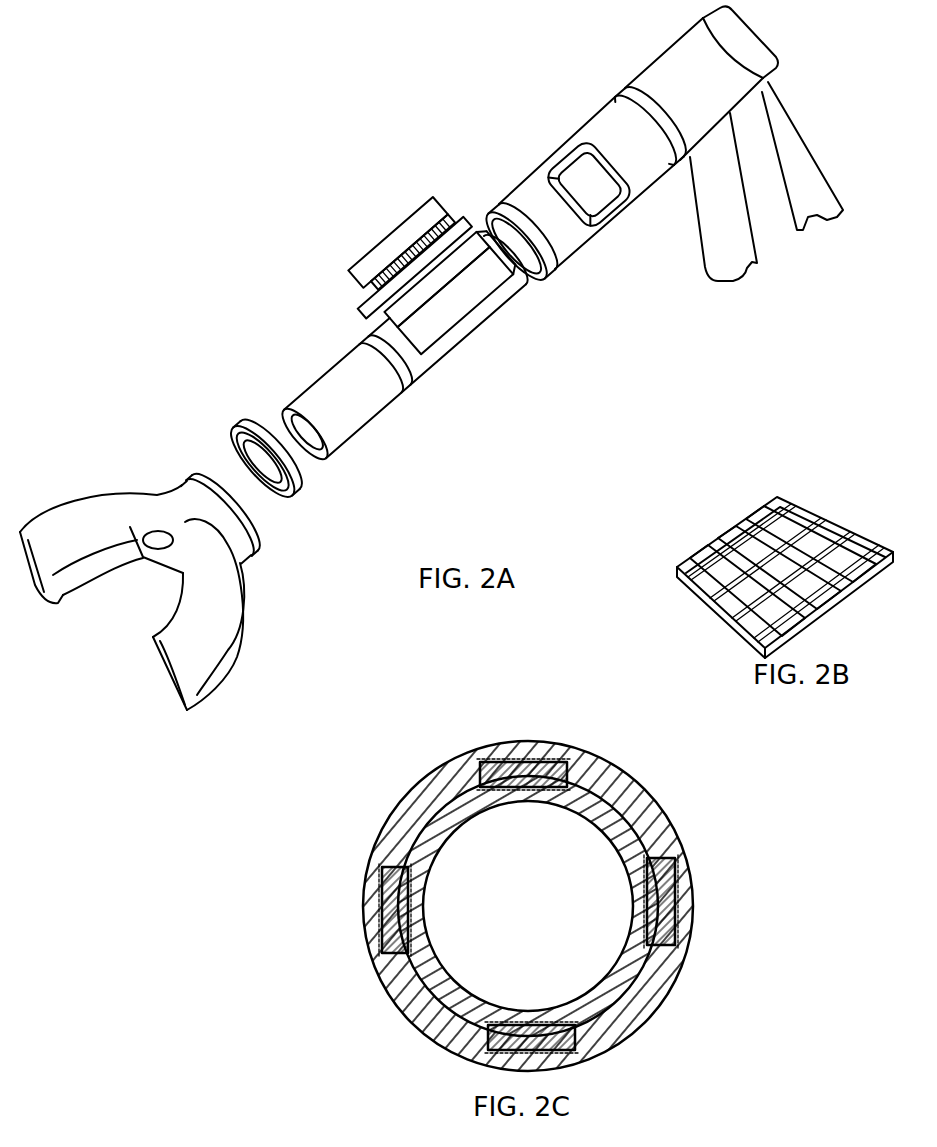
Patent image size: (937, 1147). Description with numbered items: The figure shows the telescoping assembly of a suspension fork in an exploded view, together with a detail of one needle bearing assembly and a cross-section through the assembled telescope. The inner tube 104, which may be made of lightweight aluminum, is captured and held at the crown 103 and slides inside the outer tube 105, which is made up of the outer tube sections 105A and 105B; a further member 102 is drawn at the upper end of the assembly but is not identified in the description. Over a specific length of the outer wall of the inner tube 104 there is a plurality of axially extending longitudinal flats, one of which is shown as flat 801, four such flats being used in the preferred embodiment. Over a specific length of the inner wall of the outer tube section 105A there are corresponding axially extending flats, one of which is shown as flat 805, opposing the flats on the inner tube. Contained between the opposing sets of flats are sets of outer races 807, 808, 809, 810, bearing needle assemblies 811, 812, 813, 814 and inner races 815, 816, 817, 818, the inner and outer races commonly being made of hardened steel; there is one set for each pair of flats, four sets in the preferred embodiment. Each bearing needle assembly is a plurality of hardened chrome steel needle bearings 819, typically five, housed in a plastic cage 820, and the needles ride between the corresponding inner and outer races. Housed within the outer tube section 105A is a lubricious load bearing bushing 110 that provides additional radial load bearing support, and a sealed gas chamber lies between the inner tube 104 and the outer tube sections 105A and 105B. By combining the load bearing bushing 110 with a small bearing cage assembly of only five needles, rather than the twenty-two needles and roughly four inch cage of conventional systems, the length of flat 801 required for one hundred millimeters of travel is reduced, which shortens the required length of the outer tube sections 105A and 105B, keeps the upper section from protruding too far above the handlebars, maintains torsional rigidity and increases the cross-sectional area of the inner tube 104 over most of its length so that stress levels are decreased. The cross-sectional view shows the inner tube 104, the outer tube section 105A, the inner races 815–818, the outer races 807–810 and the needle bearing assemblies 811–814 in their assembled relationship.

In FIG. 2A, the handle body 102 is at (705, 53).
In FIG. 2A, the crown 103 is at (195, 510).
In FIG. 2A, the inner tube 104 is at (345, 393).
In FIG. 2C, the inner tube 104 is at (620, 827).
In FIG. 2C, the outer tube 105 is at (613, 783).
In FIG. 2A, the outer tube section 105A is at (637, 150).
In FIG. 2A, the outer tube section 105B is at (662, 130).
In FIG. 2A, the lubricious bushing 110 is at (524, 232).
In FIG. 2A, the flat 801 is at (428, 300).
In FIG. 2A, the flat 805 is at (592, 200).
In FIG. 2C, the outer race 807 is at (378, 877).
In FIG. 2C, the outer race 808 is at (507, 1052).
In FIG. 2C, the outer race 809 is at (673, 937).
In FIG. 2A, the outer race 810 is at (425, 218).
In FIG. 2C, the outer race 810 is at (495, 770).
In FIG. 2A, the bearing needle assembly 811 is at (367, 278).
In FIG. 2C, the bearing needle assembly 811 is at (393, 913).
In FIG. 2C, the bearing needle assembly 812 is at (535, 1040).
In FIG. 2C, the bearing needle assembly 813 is at (662, 907).
In FIG. 2A, the bearing needle assembly 814 is at (365, 308).
In FIG. 2C, the bearing needle assembly 814 is at (515, 772).
In FIG. 2C, the inner race 815 is at (403, 938).
In FIG. 2C, the inner race 816 is at (560, 1032).
In FIG. 2C, the inner race 817 is at (645, 882).
In FIG. 2C, the inner race 818 is at (553, 783).
In FIG. 2A, the needle bearing 819 is at (260, 420).
In FIG. 2B, the needle bearing 819 is at (740, 583).
In FIG. 2B, the plastic cage 820 is at (780, 531).